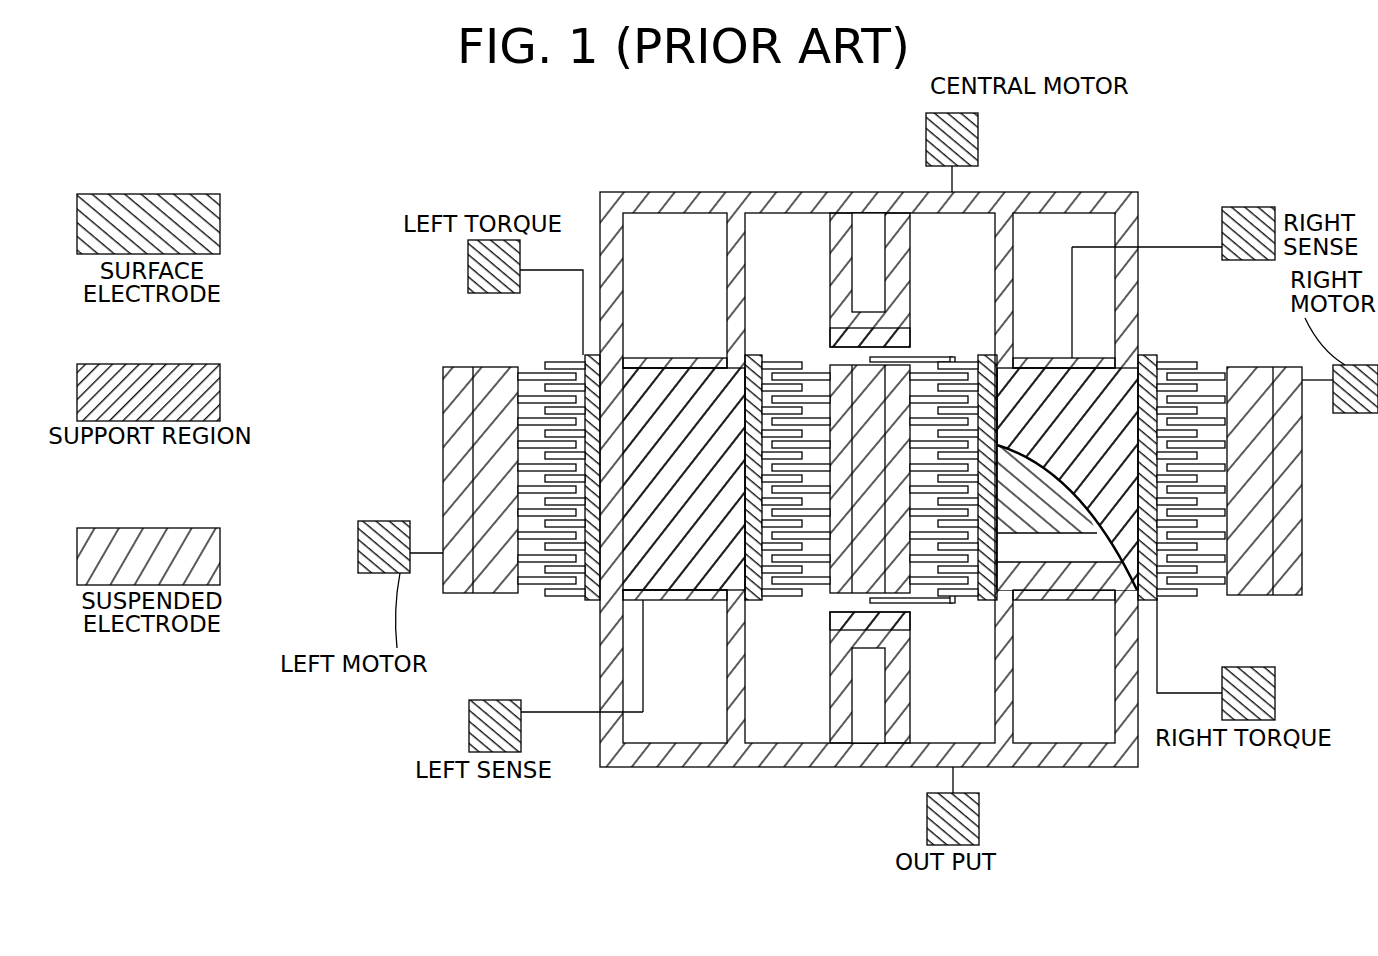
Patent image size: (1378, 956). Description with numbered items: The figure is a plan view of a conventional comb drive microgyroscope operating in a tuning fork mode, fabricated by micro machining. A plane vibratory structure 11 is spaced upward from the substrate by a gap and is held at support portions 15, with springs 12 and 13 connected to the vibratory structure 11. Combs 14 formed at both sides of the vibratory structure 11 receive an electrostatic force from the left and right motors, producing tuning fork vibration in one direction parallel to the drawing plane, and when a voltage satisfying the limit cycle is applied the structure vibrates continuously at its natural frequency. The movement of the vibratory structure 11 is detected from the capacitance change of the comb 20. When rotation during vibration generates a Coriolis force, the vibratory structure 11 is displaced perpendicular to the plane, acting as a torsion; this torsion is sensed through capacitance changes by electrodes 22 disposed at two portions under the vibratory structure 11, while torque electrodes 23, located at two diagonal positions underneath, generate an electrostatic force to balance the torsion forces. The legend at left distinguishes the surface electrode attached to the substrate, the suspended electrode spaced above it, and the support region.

The plane vibratory structure 11 is at (703, 378).
The spring 12 is at (898, 235).
The spring 13 is at (640, 742).
The comb 14 is at (570, 362).
The support portion 15 is at (905, 330).
The comb 20 is at (805, 590).
The electrode 22 is at (982, 356).
The torque electrode 23 is at (632, 362).